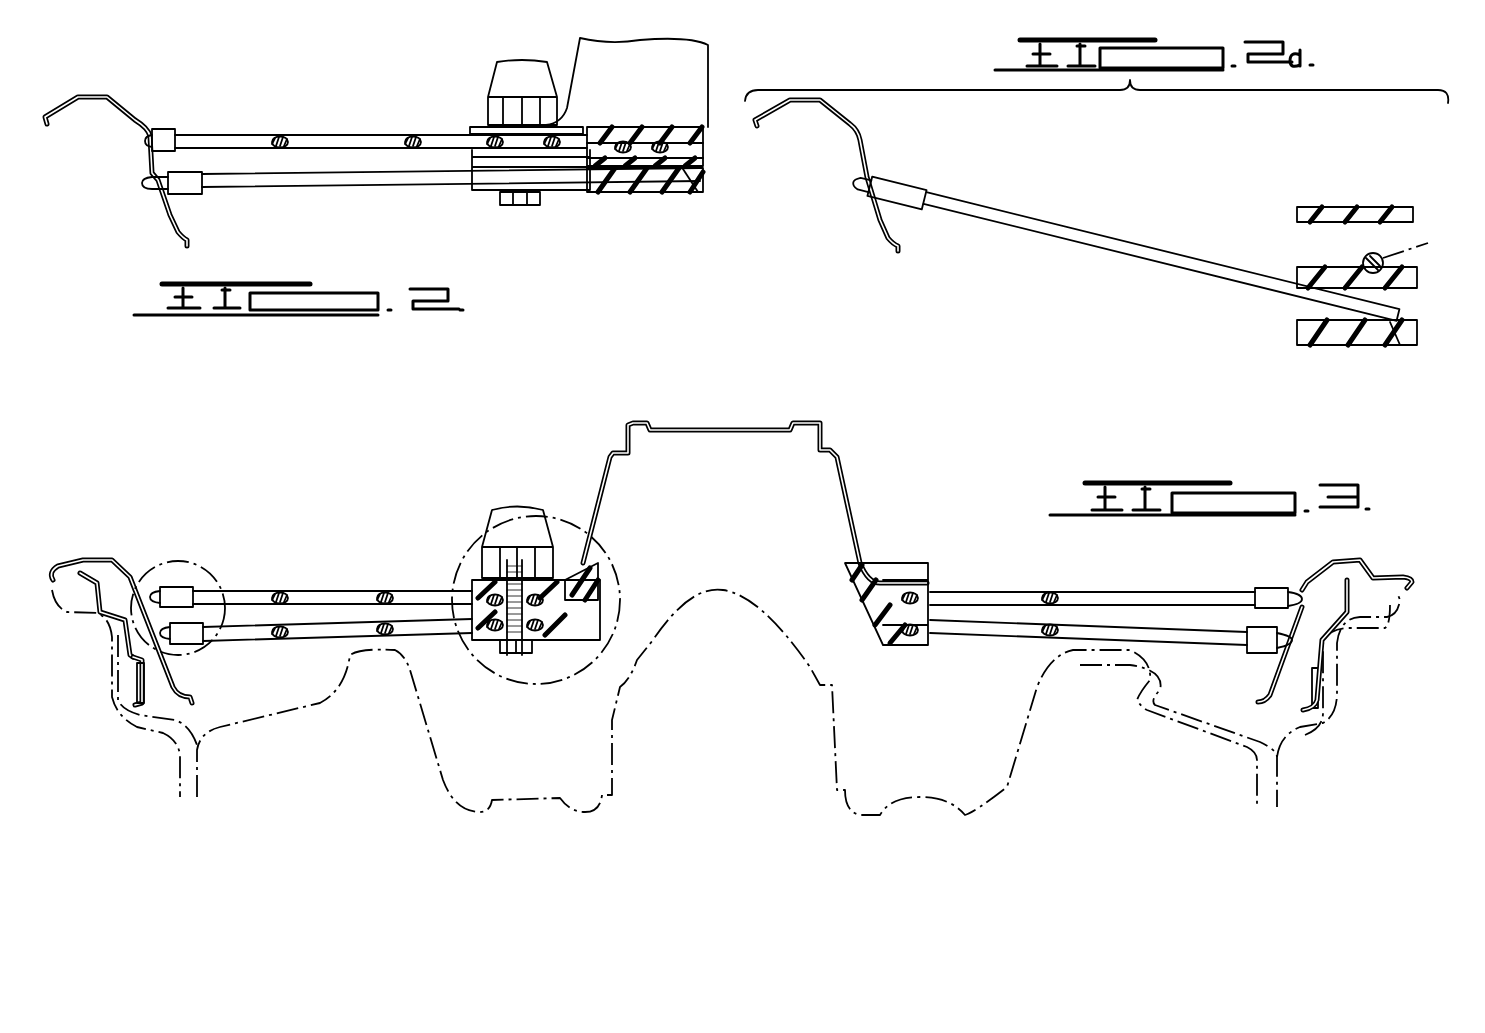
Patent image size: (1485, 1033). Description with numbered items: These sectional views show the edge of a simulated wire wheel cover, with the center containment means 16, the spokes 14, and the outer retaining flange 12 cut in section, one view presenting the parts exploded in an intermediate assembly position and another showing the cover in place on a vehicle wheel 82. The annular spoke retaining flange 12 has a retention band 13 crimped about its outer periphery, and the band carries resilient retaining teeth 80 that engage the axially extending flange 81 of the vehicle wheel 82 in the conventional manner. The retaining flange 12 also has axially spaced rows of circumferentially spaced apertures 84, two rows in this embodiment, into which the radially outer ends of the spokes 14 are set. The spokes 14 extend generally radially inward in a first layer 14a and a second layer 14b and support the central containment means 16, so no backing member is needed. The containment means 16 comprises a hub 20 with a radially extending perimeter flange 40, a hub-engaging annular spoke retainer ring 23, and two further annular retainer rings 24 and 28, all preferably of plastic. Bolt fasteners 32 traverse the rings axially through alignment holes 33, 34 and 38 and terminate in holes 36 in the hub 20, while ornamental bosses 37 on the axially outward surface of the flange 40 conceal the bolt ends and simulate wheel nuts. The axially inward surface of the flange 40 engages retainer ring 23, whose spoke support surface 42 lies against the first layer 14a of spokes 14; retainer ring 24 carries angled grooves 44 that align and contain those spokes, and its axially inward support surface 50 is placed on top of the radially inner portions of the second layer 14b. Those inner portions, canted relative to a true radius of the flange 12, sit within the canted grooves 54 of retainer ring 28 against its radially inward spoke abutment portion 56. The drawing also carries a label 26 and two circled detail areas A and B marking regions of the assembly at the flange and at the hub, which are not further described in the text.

In FIG. 2, the annular spoke retaining flange 12 is at (116, 171).
In FIG. 2A, the annular spoke retaining flange 12 is at (893, 238).
In FIG. 3, the annular spoke retaining flange 12 is at (85, 558).
In FIG. 3, the retention band 13 is at (1383, 660).
In FIG. 2A, the spokes 14 is at (1146, 242).
In FIG. 3, the spokes 14 is at (331, 598).
In FIG. 2, the first layer of spokes 14a is at (327, 124).
In FIG. 3, the first layer of spokes 14a is at (285, 584).
In FIG. 2, the second layer of spokes 14b is at (303, 195).
In FIG. 2A, the second layer of spokes 14b is at (1096, 220).
In FIG. 3, the second layer of spokes 14b is at (296, 646).
In FIG. 3, the central spoke containment means 16 is at (574, 447).
In FIG. 2, the hub 20 is at (613, 0).
In FIG. 3, the hub 20 is at (628, 430).
In FIG. 2, the hub-engaging annular spoke retainer ring 23 is at (645, 146).
In FIG. 2A, the hub-engaging annular spoke retainer ring 23 is at (1375, 207).
In FIG. 3, the hub-engaging annular spoke retainer ring 23 is at (600, 588).
In FIG. 2A, the annular spoke retainer ring 24 is at (1390, 286).
In FIG. 3, the annular spoke retainer ring 24 is at (580, 620).
In FIG. 3, the right clamp block 26 is at (886, 604).
In FIG. 2, the annular retainer ring 28 is at (645, 180).
In FIG. 2A, the annular retainer ring 28 is at (1325, 345).
In FIG. 3, the annular retainer ring 28 is at (560, 645).
In FIG. 2, the bolt fasteners 32 is at (500, 205).
In FIG. 3, the bolt fasteners 32 is at (512, 655).
In FIG. 3, the alignment holes 33 is at (540, 545).
In FIG. 2, the alignment holes 34 is at (526, 130).
In FIG. 3, the alignment holes 34 is at (470, 622).
In FIG. 3, the holes 36 is at (505, 560).
In FIG. 2, the ornamental bosses 37 is at (515, 62).
In FIG. 3, the ornamental bosses 37 is at (518, 510).
In FIG. 3, the alignment holes 38 is at (495, 632).
In FIG. 3, the radially extending flange 40 is at (475, 585).
In FIG. 2A, the spoke support surface 42 is at (1308, 222).
In FIG. 3, the spoke support surface 42 is at (585, 605).
In FIG. 2A, the grooves 44 is at (1340, 270).
In FIG. 2A, the axially inward support surface 50 is at (1330, 290).
In FIG. 2A, the grooves 54 is at (1305, 325).
In FIG. 2, the spoke abutment portion 56 is at (683, 190).
In FIG. 2A, the spoke abutment portion 56 is at (1393, 343).
In FIG. 3, the resilient retaining teeth 80 is at (140, 690).
In FIG. 3, the axially extending flange 81 is at (107, 649).
In FIG. 3, the vehicle wheel 82 is at (1016, 791).
In FIG. 2, the apertures 84 is at (172, 161).
In FIG. 2A, the apertures 84 is at (865, 177).
In FIG. 3, the apertures 84 is at (127, 573).
In FIG. 3, the detail circle A is at (199, 556).
In FIG. 3, the detail circle B is at (632, 614).